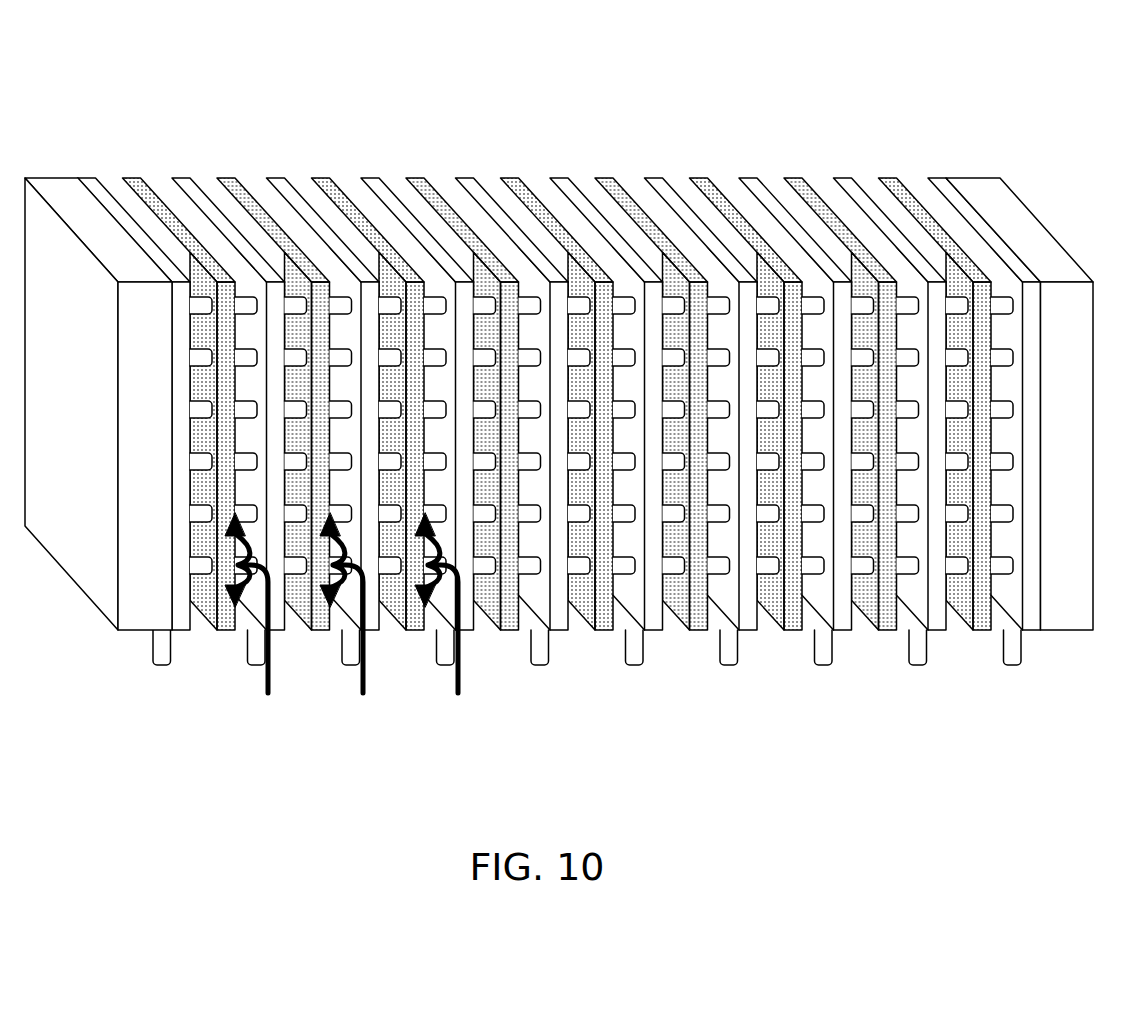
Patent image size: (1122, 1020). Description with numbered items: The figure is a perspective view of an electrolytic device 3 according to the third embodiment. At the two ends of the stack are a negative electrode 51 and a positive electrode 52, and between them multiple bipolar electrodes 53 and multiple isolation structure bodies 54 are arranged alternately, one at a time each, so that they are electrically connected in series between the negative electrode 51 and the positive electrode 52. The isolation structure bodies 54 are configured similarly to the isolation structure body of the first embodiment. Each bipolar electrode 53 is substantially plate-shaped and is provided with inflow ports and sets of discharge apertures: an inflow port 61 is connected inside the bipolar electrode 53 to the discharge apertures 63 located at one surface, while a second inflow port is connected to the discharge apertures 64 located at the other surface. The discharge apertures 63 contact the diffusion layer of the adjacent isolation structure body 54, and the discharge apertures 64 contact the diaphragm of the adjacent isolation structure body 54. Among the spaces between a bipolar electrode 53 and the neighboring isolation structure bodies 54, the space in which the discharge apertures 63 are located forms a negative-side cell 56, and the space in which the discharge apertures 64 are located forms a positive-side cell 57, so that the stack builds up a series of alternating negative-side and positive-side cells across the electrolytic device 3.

The electrolytic device 3 is at (568, 415).
The negative electrode 51 is at (981, 188).
The positive electrode 52 is at (58, 188).
The bipolar electrode 53 is at (183, 188).
The isolation structure body 54 is at (132, 188).
The negative-side cell 56 is at (820, 188).
The positive-side cell 57 is at (772, 188).
The inflow port 61 is at (918, 657).
The discharge aperture 63 is at (817, 567).
The discharge aperture 64 is at (865, 567).